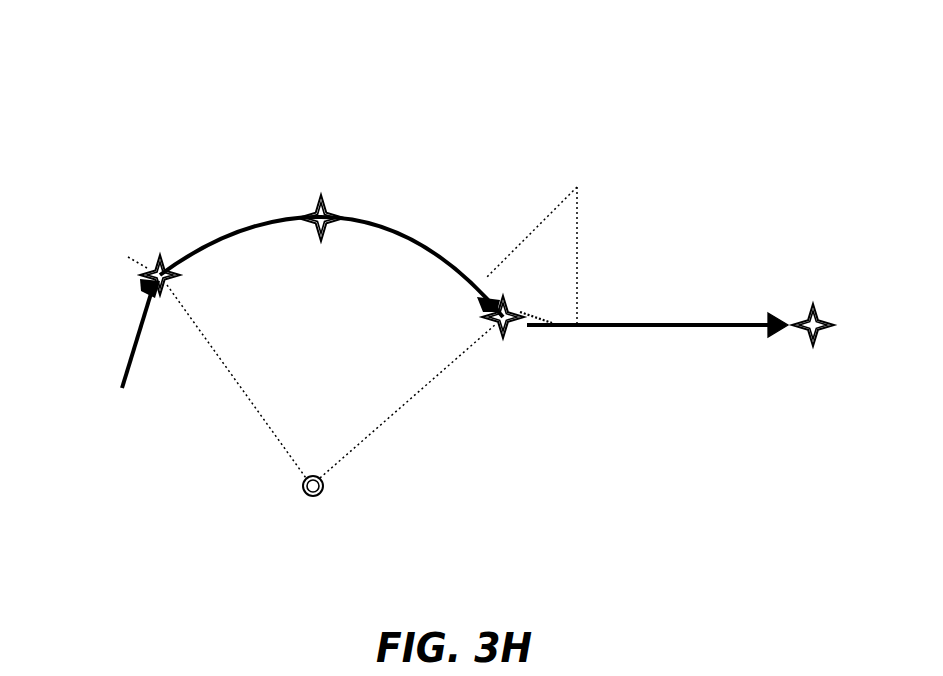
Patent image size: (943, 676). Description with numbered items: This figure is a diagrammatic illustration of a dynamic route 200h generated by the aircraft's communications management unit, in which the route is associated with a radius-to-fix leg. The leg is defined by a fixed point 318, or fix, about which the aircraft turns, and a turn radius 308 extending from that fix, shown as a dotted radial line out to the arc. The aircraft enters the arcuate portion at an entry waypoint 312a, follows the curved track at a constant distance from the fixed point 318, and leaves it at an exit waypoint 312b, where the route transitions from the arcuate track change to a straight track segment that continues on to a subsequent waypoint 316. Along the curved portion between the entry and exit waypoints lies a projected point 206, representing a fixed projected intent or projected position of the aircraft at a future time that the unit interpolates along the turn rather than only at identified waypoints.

The dynamic route 200h is at (106, 100).
The entry waypoint 312a is at (162, 255).
The projected point 206 is at (323, 241).
The exit waypoint 312b is at (497, 333).
The subsequent waypoint 316 is at (806, 310).
The turn radius 308 is at (248, 400).
The fixed point 318 is at (323, 487).